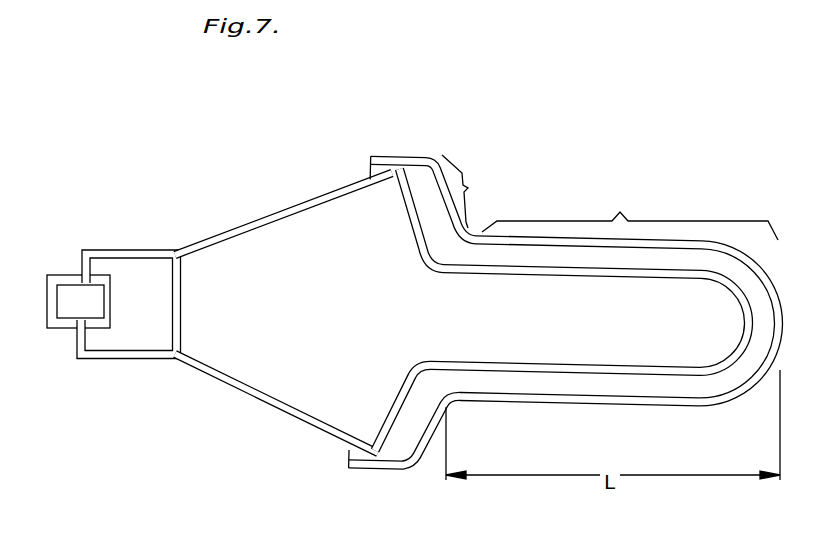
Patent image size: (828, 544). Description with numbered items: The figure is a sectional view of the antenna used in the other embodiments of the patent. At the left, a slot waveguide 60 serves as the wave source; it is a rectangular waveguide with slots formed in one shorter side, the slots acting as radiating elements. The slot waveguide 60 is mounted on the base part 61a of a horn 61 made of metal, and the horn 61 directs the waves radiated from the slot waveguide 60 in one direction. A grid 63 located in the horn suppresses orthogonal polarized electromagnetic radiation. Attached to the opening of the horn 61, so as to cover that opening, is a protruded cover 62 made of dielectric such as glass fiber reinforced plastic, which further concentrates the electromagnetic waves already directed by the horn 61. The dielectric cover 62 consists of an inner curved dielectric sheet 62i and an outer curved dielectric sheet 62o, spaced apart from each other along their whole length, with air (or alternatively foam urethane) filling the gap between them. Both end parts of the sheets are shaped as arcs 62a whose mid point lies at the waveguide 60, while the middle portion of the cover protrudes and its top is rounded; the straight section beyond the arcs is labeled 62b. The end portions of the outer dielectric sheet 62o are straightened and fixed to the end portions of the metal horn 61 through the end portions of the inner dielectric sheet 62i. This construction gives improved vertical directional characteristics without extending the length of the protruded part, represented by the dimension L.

The slot waveguide 60 is at (103, 286).
The horn 61 is at (266, 215).
The base part of the horn 61a is at (60, 275).
The protruded dielectric cover 62 is at (565, 317).
The arcs 62a is at (468, 188).
The straight portion of tube 62b is at (620, 212).
The outer curved dielectric sheet 62o is at (518, 402).
The inner curved dielectric sheet 62i is at (603, 375).
The grid 63 is at (180, 323).